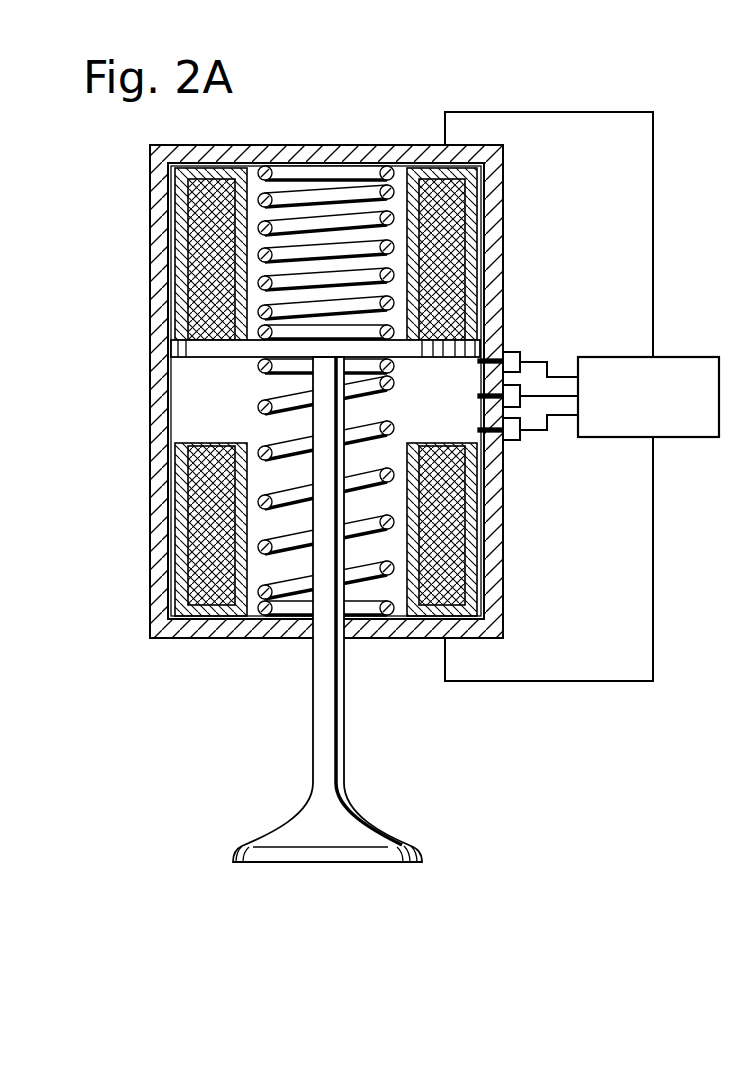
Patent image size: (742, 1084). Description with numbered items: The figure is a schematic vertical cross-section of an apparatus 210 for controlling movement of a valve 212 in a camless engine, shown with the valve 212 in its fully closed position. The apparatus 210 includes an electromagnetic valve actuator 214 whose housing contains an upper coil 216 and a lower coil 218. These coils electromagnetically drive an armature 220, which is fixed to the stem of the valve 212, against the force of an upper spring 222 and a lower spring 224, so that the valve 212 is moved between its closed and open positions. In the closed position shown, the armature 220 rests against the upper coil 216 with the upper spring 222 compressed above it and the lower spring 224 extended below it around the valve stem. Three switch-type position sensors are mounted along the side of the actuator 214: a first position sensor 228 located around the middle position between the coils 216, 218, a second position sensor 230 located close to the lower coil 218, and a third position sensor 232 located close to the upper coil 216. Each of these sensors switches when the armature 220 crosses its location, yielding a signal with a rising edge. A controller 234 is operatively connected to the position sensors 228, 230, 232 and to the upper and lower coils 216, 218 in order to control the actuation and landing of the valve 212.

The apparatus 210 is at (490, 100).
The valve 212 is at (375, 827).
The electromagnetic valve actuator 214 is at (150, 403).
The upper coil 216 is at (202, 257).
The lower coil 218 is at (202, 530).
The armature 220 is at (193, 345).
The upper spring 222 is at (328, 170).
The lower spring 224 is at (360, 573).
The first position sensor 228 is at (525, 390).
The second position sensor 230 is at (510, 442).
The third position sensor 232 is at (510, 352).
The controller 234 is at (690, 438).